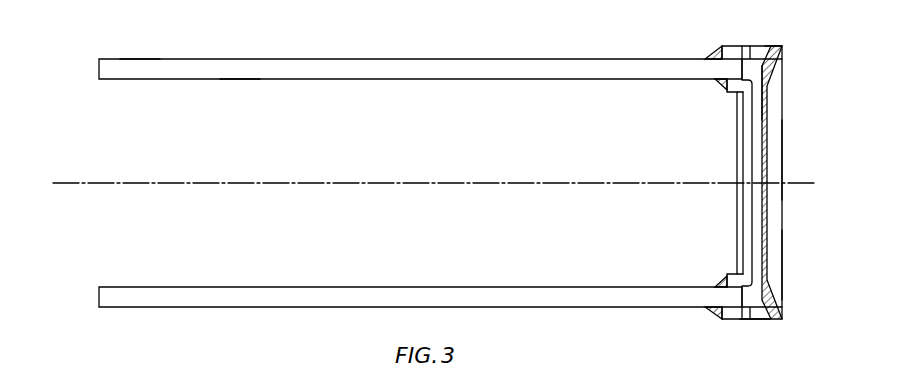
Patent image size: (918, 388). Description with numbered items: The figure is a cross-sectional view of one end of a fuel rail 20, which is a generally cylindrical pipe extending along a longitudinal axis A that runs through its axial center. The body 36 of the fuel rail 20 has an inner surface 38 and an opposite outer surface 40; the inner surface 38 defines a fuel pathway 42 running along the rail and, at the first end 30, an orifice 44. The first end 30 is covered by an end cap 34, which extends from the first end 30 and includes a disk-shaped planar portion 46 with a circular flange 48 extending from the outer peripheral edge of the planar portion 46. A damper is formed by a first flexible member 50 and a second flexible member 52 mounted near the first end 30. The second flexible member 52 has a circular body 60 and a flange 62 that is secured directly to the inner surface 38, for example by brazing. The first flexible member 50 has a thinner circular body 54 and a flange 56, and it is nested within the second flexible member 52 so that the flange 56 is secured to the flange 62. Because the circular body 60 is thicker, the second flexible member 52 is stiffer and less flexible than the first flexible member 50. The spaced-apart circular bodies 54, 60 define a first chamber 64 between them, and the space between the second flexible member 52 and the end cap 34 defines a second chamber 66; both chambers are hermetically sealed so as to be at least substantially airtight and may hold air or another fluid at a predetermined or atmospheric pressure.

The fuel rail 20 is at (420, 159).
The first end 30 is at (723, 50).
The end cap 34 is at (783, 318).
The body 36 is at (135, 59).
The inner surface 38 is at (240, 79).
The outer surface 40 is at (357, 59).
The fuel pathway 42 is at (392, 156).
The orifice 44 is at (770, 184).
The planar portion 46 is at (783, 266).
The circular flange 48 is at (752, 320).
The first flexible member 50 is at (768, 128).
The second flexible member 52 is at (770, 158).
The circular body 54 is at (737, 163).
The flange 56 is at (732, 95).
The circular body 60 is at (750, 222).
The flange 62 is at (735, 272).
The first chamber 64 is at (769, 100).
The second chamber 66 is at (773, 55).
The longitudinal axis A is at (90, 183).